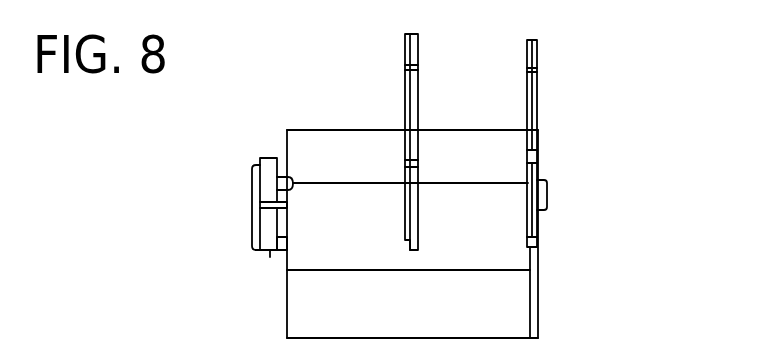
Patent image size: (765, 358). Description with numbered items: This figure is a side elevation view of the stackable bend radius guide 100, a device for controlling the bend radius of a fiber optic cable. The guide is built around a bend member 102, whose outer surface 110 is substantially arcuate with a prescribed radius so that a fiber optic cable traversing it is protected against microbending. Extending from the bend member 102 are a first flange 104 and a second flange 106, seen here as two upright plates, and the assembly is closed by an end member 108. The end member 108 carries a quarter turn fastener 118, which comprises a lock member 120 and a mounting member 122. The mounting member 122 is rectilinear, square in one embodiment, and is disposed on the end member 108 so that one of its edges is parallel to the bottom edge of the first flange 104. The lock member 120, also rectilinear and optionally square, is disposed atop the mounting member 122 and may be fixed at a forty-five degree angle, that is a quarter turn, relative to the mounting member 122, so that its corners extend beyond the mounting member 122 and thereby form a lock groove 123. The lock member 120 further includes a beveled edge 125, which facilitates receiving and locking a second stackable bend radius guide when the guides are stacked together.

The stackable bend radius guide 100 is at (626, 158).
The bend member 102 is at (497, 248).
The first flange 104 is at (537, 57).
The second flange 106 is at (418, 53).
The end member 108 is at (287, 305).
The outer surface 110 is at (350, 129).
The quarter turn fastener 118 is at (236, 210).
The lock member 120 is at (270, 256).
The mounting member 122 is at (283, 219).
The lock groove 123 is at (281, 176).
The beveled edge 125 is at (258, 160).